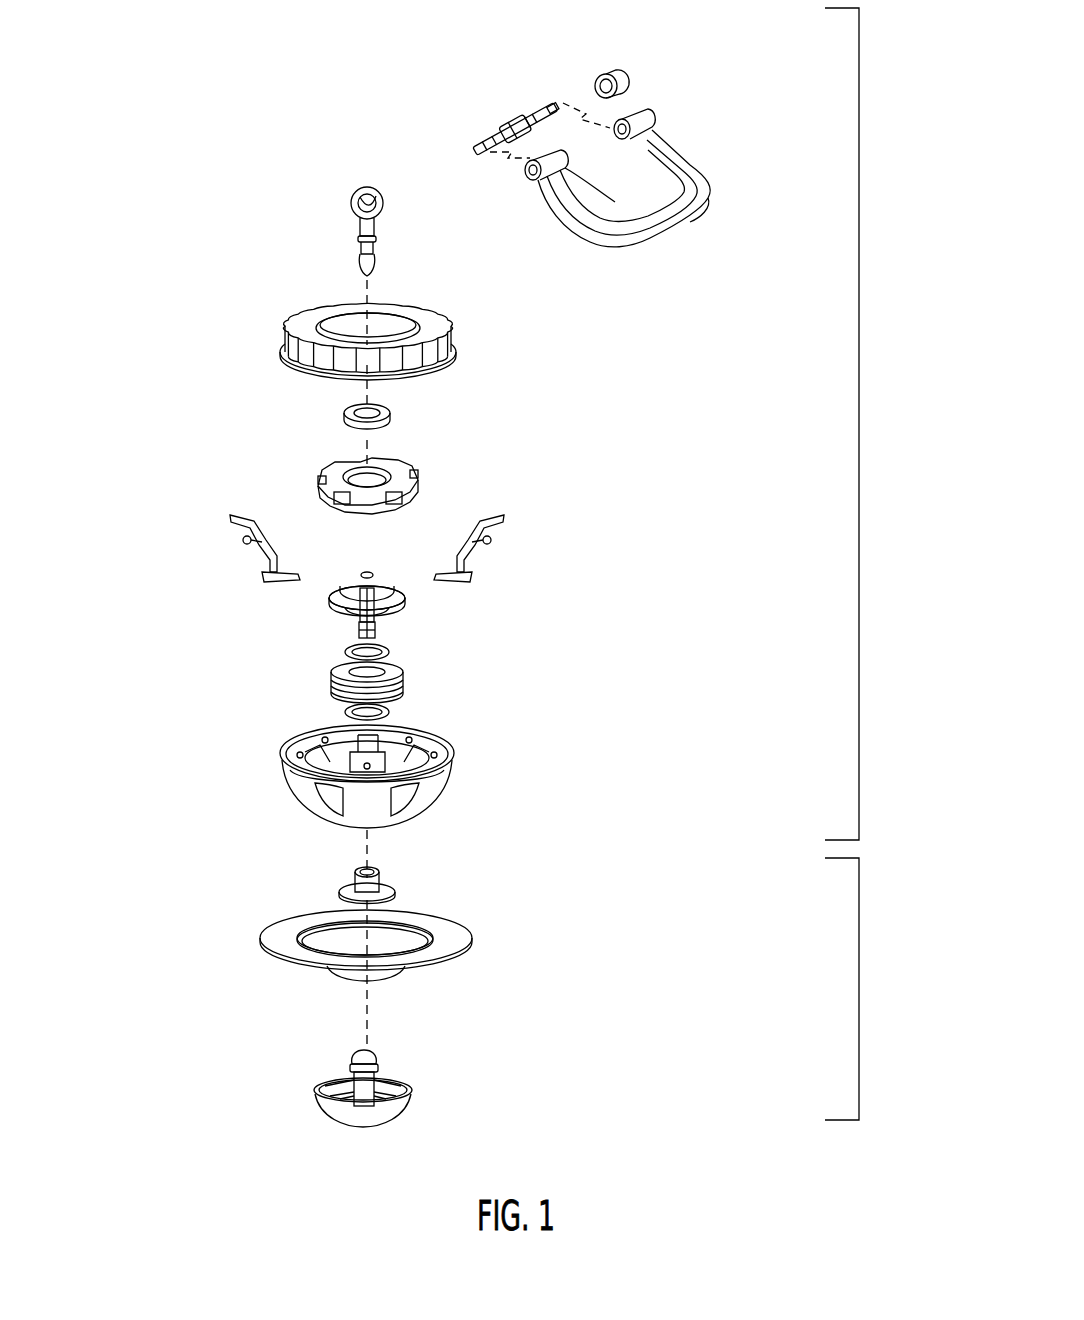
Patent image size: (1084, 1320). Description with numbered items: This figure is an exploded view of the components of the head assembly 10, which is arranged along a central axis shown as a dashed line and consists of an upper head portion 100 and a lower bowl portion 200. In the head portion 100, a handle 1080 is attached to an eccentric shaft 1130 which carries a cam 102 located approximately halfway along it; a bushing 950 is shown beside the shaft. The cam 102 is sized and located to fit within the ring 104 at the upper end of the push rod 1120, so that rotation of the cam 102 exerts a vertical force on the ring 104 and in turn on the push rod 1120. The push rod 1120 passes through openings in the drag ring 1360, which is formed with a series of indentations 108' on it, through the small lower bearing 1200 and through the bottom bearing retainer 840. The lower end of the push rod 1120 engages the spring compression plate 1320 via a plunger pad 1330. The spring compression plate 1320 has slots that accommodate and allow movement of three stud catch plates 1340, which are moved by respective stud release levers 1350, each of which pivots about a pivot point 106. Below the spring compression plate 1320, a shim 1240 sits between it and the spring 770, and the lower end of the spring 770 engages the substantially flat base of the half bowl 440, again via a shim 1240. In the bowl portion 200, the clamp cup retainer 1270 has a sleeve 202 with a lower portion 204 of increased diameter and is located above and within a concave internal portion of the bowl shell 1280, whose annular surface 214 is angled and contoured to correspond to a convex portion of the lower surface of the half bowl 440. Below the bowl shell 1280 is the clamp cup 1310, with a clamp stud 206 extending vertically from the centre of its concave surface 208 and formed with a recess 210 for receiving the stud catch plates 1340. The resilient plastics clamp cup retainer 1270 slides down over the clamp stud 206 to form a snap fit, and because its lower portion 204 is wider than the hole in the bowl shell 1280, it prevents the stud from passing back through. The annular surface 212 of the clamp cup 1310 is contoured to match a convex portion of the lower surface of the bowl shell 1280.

The head assembly 10 is at (378, 108).
The head portion 100 is at (837, 424).
The bowl portion 200 is at (837, 989).
The cam 102 is at (510, 110).
The eccentric shaft 1130 is at (538, 104).
The bushing 950 is at (632, 74).
The handle 1080 is at (686, 156).
The ring 104 is at (368, 188).
The push rod 1120 is at (352, 222).
The drag ring 1360 is at (306, 326).
The indentations 108' is at (416, 353).
The small lower bearing 1200 is at (345, 415).
The bottom bearing retainer 840 is at (340, 465).
The spring compression plate 1320 is at (388, 588).
The stud release lever 1350 is at (240, 514).
The pivot point 106 is at (246, 544).
The stud catch plate 1340 is at (262, 582).
The plunger pad 1330 is at (356, 575).
The shim 1240 is at (392, 652).
The spring 770 is at (334, 673).
The half bowl 440 is at (314, 789).
The sleeve 202 is at (378, 870).
The lower portion 204 is at (396, 892).
The clamp cup retainer 1270 is at (340, 888).
The annular surface 214 is at (430, 920).
The bowl shell 1280 is at (286, 948).
The recess 210 is at (378, 1062).
The clamp stud 206 is at (378, 1080).
The concave surface 208 is at (338, 1080).
The annular surface 212 is at (410, 1084).
The clamp cup 1310 is at (353, 1125).